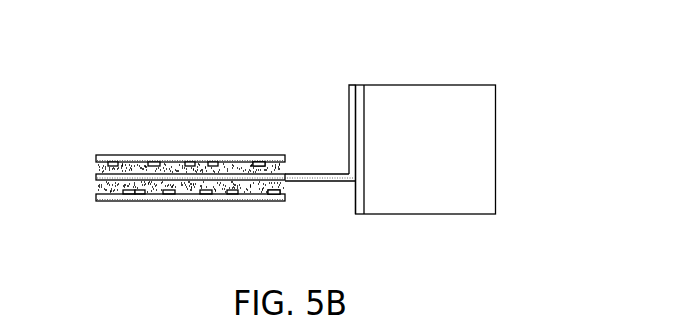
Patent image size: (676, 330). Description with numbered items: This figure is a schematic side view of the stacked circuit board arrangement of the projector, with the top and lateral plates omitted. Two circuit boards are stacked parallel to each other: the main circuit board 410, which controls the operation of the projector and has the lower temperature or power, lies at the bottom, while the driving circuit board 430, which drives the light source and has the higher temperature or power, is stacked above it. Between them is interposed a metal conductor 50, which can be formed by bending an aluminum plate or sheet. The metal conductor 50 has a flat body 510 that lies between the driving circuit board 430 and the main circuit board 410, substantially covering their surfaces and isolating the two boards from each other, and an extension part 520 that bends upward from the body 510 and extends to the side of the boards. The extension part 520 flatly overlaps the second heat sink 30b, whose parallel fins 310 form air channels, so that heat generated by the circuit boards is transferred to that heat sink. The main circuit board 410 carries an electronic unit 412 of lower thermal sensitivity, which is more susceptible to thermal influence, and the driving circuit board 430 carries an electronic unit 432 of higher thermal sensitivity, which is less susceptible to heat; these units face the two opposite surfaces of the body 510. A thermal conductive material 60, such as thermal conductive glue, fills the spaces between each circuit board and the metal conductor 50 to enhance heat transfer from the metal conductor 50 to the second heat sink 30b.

The metal conductor 50 is at (323, 15).
The body 510 is at (305, 176).
The extension part 520 is at (353, 84).
The second heat sink 30b is at (362, 84).
The fins 310 is at (490, 142).
The driving circuit board 430 is at (133, 156).
The electronic unit of higher thermal sensitivity 432 is at (155, 162).
The main circuit board 410 is at (138, 201).
The electronic unit of lower thermal sensitivity 412 is at (172, 195).
The thermal conductive material 60 is at (273, 167).